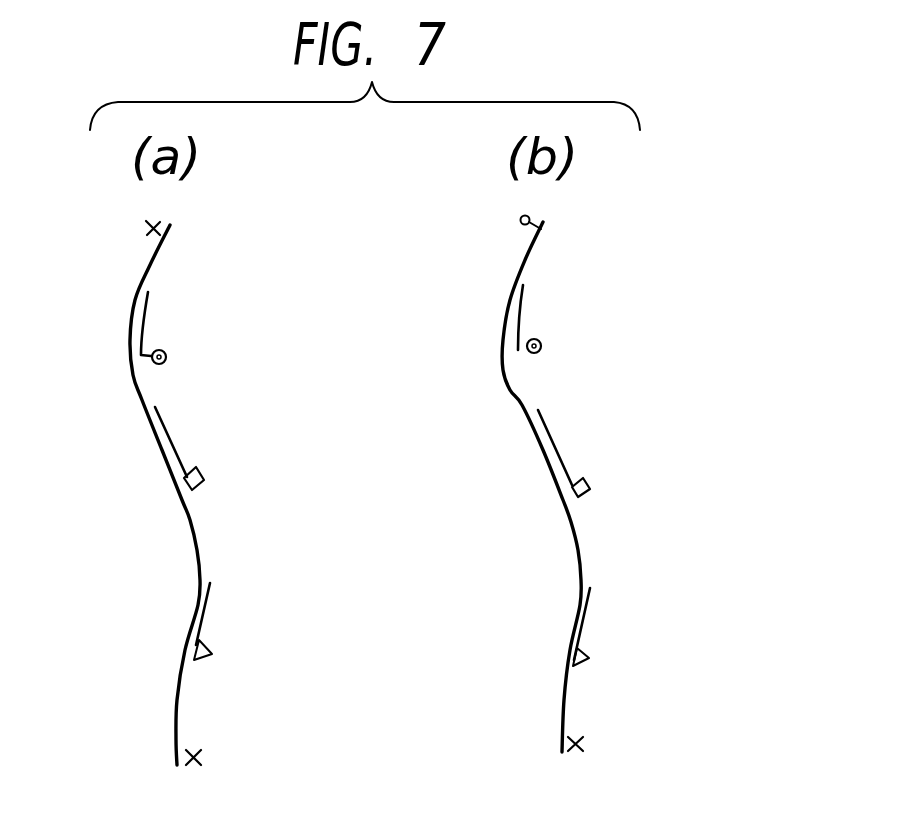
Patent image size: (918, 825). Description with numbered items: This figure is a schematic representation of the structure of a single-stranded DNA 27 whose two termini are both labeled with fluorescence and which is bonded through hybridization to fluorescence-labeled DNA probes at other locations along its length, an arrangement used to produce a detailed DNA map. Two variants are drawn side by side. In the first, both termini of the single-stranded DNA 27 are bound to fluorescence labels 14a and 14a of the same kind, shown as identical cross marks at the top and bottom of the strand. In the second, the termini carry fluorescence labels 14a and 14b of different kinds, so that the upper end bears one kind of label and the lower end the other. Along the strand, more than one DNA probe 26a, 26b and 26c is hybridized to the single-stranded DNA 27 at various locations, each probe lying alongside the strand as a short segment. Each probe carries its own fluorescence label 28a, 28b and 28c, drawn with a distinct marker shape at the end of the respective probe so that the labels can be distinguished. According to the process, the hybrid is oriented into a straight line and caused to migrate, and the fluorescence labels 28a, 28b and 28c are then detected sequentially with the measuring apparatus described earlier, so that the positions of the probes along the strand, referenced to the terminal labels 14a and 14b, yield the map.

The single-stranded DNA 27 is at (190, 527).
The fluorescence label 14a is at (150, 224).
The fluorescence label 14b is at (520, 222).
The DNA probe 26a is at (203, 608).
The DNA probe 26b is at (170, 440).
The DNA probe 26c is at (141, 323).
The fluorescence label 28a is at (210, 656).
The fluorescence label 28b is at (204, 478).
The fluorescence label 28c is at (167, 360).